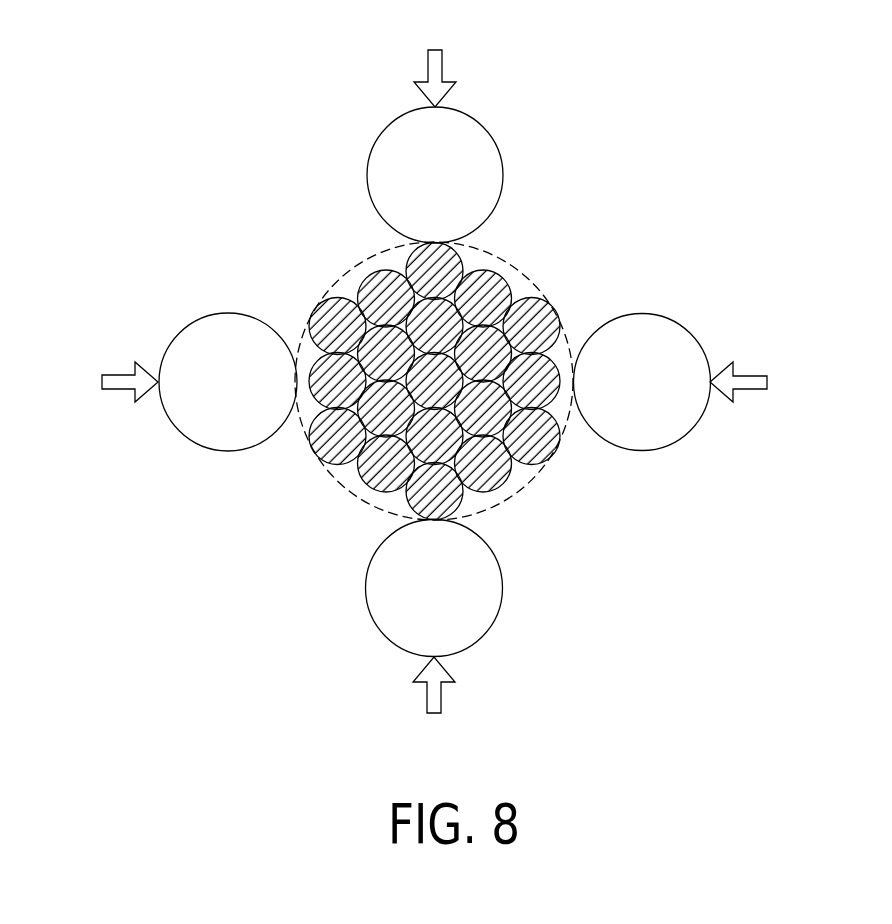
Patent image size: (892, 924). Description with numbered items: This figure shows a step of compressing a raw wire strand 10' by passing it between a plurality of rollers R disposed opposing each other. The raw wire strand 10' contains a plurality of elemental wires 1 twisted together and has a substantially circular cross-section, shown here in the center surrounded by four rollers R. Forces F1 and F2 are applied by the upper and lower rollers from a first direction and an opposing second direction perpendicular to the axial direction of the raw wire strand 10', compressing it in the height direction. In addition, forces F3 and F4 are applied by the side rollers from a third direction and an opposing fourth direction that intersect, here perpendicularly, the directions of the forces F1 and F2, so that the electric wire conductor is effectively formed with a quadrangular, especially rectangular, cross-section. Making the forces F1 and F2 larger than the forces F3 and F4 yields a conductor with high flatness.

The elemental wire 1 is at (503, 277).
The raw wire strand 10' is at (401, 354).
The roller R is at (480, 158).
The force F1 is at (435, 60).
The force F2 is at (434, 705).
The force F3 is at (113, 382).
The force F4 is at (755, 382).